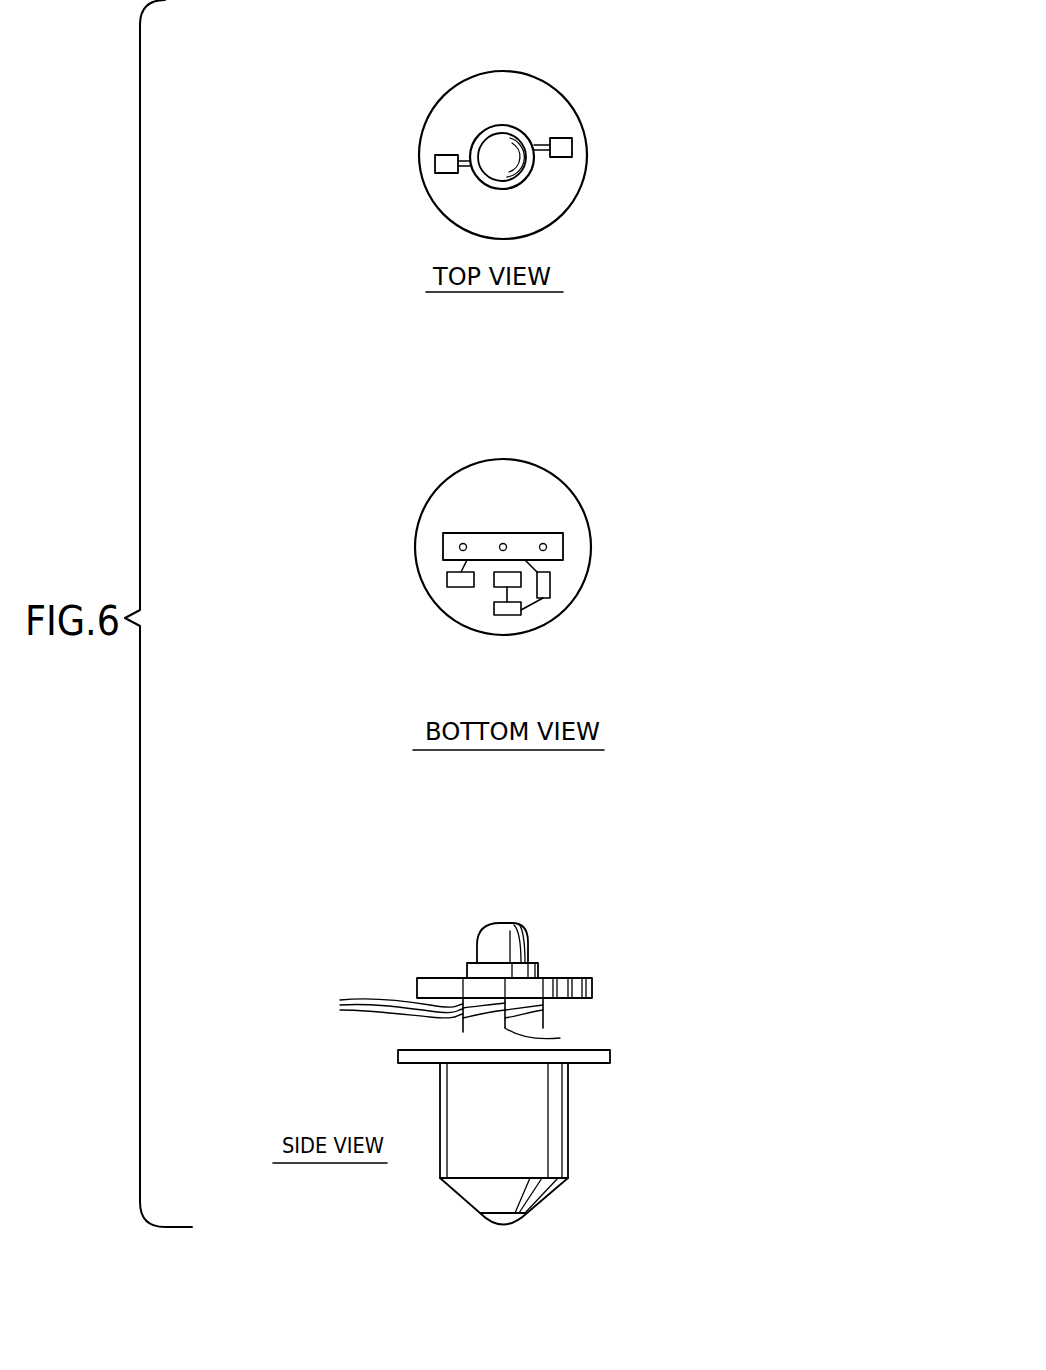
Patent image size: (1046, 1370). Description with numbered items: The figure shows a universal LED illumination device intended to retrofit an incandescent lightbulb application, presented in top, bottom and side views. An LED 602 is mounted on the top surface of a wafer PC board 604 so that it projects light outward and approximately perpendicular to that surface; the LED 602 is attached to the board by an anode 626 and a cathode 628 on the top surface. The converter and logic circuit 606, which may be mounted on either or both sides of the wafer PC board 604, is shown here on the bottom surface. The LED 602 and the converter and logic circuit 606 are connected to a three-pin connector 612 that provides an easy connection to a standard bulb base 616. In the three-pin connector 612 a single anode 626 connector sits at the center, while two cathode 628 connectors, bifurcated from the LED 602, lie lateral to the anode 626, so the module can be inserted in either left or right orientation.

The LED 602 is at (500, 145).
The wafer PC board 604 is at (533, 235).
The converter and logic circuit 606 is at (453, 588).
The 3-pin connector 612 is at (540, 533).
The standard bulb base 616 is at (568, 1120).
The anode 626 is at (633, 1050).
The cathode 628 is at (560, 148).